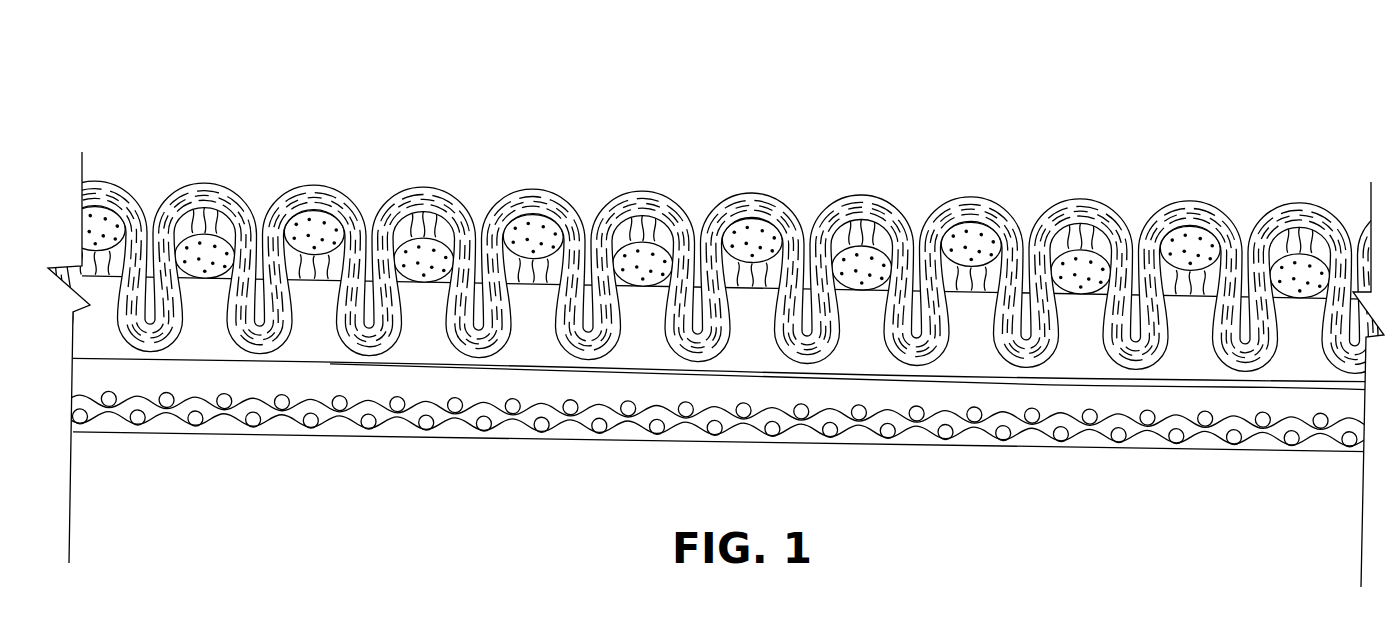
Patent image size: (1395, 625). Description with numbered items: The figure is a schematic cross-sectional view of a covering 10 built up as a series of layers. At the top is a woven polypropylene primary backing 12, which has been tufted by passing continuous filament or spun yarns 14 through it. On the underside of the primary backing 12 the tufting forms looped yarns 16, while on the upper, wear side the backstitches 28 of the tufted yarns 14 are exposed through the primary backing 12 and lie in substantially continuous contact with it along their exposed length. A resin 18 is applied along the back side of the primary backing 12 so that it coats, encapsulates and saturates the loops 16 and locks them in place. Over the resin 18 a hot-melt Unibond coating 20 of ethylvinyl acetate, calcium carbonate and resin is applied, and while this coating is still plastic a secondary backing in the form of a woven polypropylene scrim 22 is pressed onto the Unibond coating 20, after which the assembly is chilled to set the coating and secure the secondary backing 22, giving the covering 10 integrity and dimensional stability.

The covering 10 is at (268, 122).
The primary backing 12 is at (848, 250).
The yarns 14 is at (1062, 201).
The looped yarns 16 is at (1133, 360).
The resin 18 is at (734, 338).
The Unibond coating 20 is at (1015, 398).
The secondary backing scrim 22 is at (568, 427).
The backstitches 28 is at (1200, 201).